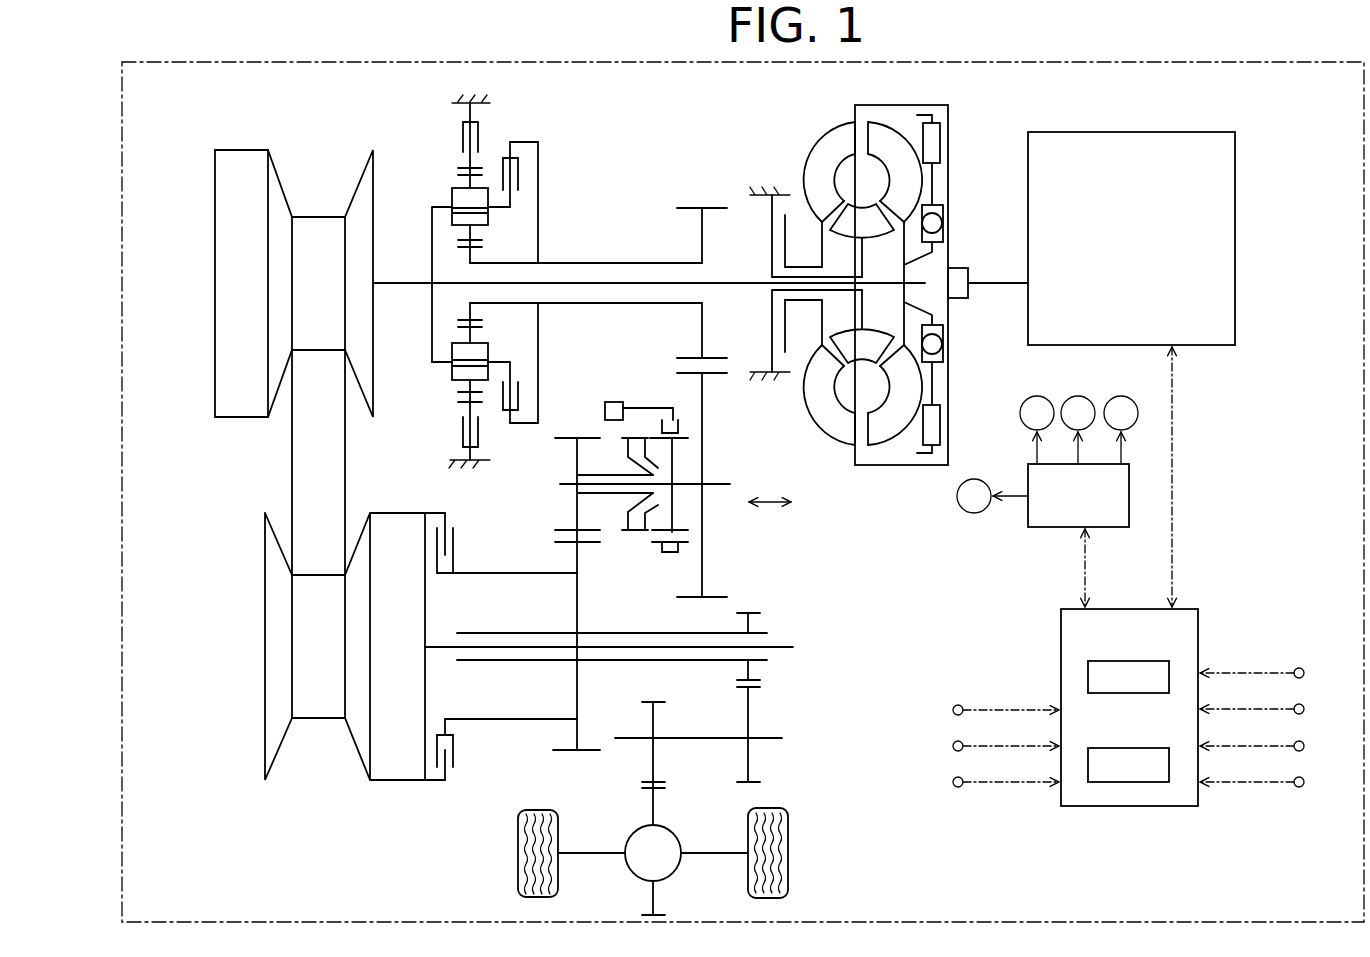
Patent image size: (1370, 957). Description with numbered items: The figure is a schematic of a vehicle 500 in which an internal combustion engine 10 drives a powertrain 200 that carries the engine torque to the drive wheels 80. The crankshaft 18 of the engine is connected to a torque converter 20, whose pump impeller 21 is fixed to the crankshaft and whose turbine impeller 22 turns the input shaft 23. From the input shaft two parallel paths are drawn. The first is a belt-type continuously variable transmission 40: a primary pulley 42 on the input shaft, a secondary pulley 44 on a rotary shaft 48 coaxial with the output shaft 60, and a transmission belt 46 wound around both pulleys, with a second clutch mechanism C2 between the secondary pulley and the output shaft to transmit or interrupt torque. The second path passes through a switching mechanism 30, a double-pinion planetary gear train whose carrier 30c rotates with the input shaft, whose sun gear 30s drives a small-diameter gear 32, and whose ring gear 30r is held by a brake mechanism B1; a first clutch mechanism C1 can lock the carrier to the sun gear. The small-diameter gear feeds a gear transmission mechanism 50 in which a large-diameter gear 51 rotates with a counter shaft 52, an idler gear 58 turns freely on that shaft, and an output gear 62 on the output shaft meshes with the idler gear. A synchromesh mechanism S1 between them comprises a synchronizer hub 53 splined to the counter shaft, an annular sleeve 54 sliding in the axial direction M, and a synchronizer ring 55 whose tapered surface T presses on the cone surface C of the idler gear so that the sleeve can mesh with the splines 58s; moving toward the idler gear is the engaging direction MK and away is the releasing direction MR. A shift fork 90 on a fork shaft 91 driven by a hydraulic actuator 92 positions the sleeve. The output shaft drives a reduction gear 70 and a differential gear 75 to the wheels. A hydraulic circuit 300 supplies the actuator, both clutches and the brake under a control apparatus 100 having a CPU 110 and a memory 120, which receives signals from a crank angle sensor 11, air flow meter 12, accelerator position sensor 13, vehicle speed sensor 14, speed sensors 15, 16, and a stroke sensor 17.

The vehicle 500 is at (122, 130).
The internal combustion engine 10 is at (1236, 250).
The crankshaft 18 is at (992, 283).
The torque converter 20 is at (795, 151).
The pump impeller 21 is at (833, 422).
The turbine impeller 22 is at (897, 440).
The input shaft 23 is at (735, 282).
The switching mechanism 30 is at (568, 160).
The ring gear 30r is at (462, 158).
The carrier 30c is at (486, 218).
The sun gear 30s is at (478, 322).
The small-diameter gear 32 is at (715, 356).
The belt-type continuously variable transmission 40 is at (198, 157).
The primary pulley 42 is at (215, 262).
The secondary pulley 44 is at (265, 575).
The transmission belt 46 is at (292, 468).
The rotary shaft 48 is at (783, 647).
The gear transmission mechanism 50 is at (616, 381).
The large-diameter gear 51 is at (708, 485).
The counter shaft 52 is at (712, 483).
The synchronizer hub 53 is at (673, 520).
The sleeve 54 is at (680, 552).
The synchronizer ring 55 is at (638, 525).
The idler gear 58 is at (560, 530).
The splines 58s is at (628, 540).
The output shaft 60 is at (613, 662).
The output gear 62 is at (560, 543).
The reduction gear 70 is at (772, 706).
The differential gear 75 is at (627, 838).
The drive wheels 80 is at (790, 856).
The shift fork 90 is at (672, 420).
The fork shaft 91 is at (642, 407).
The hydraulic actuator 92 is at (604, 410).
The control apparatus 100 is at (1095, 576).
The central processing unit 110 is at (1105, 661).
The memory 120 is at (1105, 748).
The powertrain 200 is at (815, 559).
The hydraulic circuit 300 is at (1045, 527).
The crank angle sensor 11 is at (1305, 673).
The air flow meter 12 is at (1305, 709).
The accelerator position sensor 13 is at (1305, 746).
The vehicle speed sensor 14 is at (1305, 782).
The speed sensor 15 is at (952, 782).
The speed sensor 16 is at (952, 746).
The stroke sensor 17 is at (952, 710).
The brake mechanism B1 is at (462, 432).
The first clutch mechanism C1 is at (505, 410).
The second clutch mechanism C2 is at (455, 750).
The cone surface C is at (660, 507).
The tapered surface T is at (650, 470).
The axial direction M is at (770, 497).
The engaging direction MK is at (729, 503).
The releasing direction MR is at (812, 503).
The synchromesh mechanism S1 is at (656, 567).